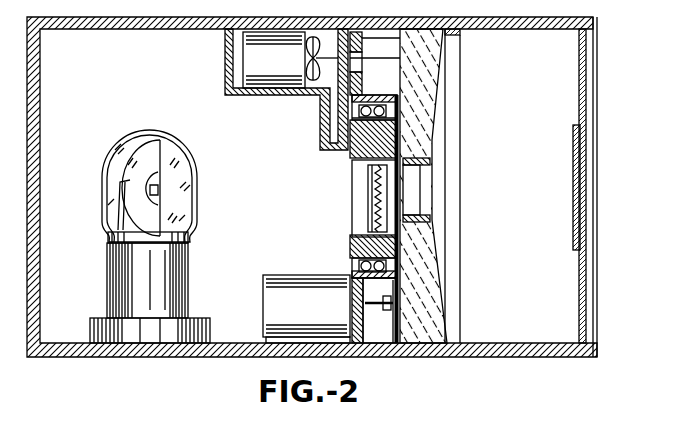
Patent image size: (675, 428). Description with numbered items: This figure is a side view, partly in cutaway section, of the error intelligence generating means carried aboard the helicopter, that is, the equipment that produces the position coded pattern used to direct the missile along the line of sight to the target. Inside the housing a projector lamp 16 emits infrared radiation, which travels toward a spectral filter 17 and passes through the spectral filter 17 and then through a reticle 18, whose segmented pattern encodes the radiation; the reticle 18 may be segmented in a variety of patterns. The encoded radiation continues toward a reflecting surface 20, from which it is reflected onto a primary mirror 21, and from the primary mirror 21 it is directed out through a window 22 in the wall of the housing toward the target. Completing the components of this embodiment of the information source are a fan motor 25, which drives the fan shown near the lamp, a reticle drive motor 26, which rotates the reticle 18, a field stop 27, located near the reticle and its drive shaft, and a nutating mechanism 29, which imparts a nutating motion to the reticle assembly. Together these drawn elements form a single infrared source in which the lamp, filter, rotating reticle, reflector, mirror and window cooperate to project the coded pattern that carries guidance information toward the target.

The projector lamp 16 is at (128, 133).
The spectral filter 17 is at (372, 197).
The reticle 18 is at (406, 186).
The reflecting surface 20 is at (573, 153).
The primary mirror 21 is at (426, 295).
The window 22 is at (592, 87).
The fan motor 25 is at (284, 74).
The reticle drive motor 26 is at (319, 320).
The field stop 27 is at (400, 170).
The nutating mechanism 29 is at (362, 247).